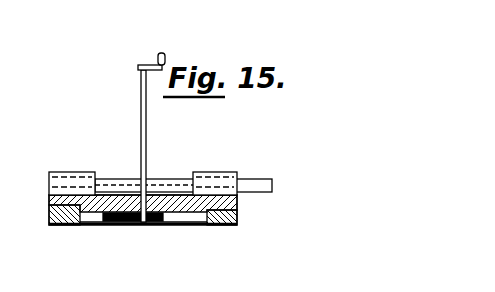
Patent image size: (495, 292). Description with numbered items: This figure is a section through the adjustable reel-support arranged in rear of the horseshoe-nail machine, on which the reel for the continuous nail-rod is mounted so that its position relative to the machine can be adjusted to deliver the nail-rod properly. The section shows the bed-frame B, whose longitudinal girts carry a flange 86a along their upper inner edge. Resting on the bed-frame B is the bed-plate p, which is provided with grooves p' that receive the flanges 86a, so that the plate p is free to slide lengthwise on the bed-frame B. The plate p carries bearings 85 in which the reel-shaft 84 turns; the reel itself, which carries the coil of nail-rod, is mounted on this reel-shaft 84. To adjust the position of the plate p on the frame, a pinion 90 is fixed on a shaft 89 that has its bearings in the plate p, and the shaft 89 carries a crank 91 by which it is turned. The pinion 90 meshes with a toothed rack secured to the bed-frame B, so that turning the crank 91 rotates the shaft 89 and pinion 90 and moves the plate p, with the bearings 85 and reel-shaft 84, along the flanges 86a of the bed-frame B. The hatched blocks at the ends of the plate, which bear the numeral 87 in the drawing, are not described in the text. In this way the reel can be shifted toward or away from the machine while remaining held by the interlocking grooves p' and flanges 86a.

The crank 91 is at (165, 58).
The shaft 89 is at (141, 97).
The reel-shaft 84 is at (167, 179).
The bearings 85 is at (72, 172).
The flange 86a is at (97, 193).
The end blocks 87 is at (49, 209).
The pinion 90 is at (159, 223).
The bed-plate p is at (91, 226).
The grooves p' is at (137, 247).
The bed-frame B is at (26, 244).